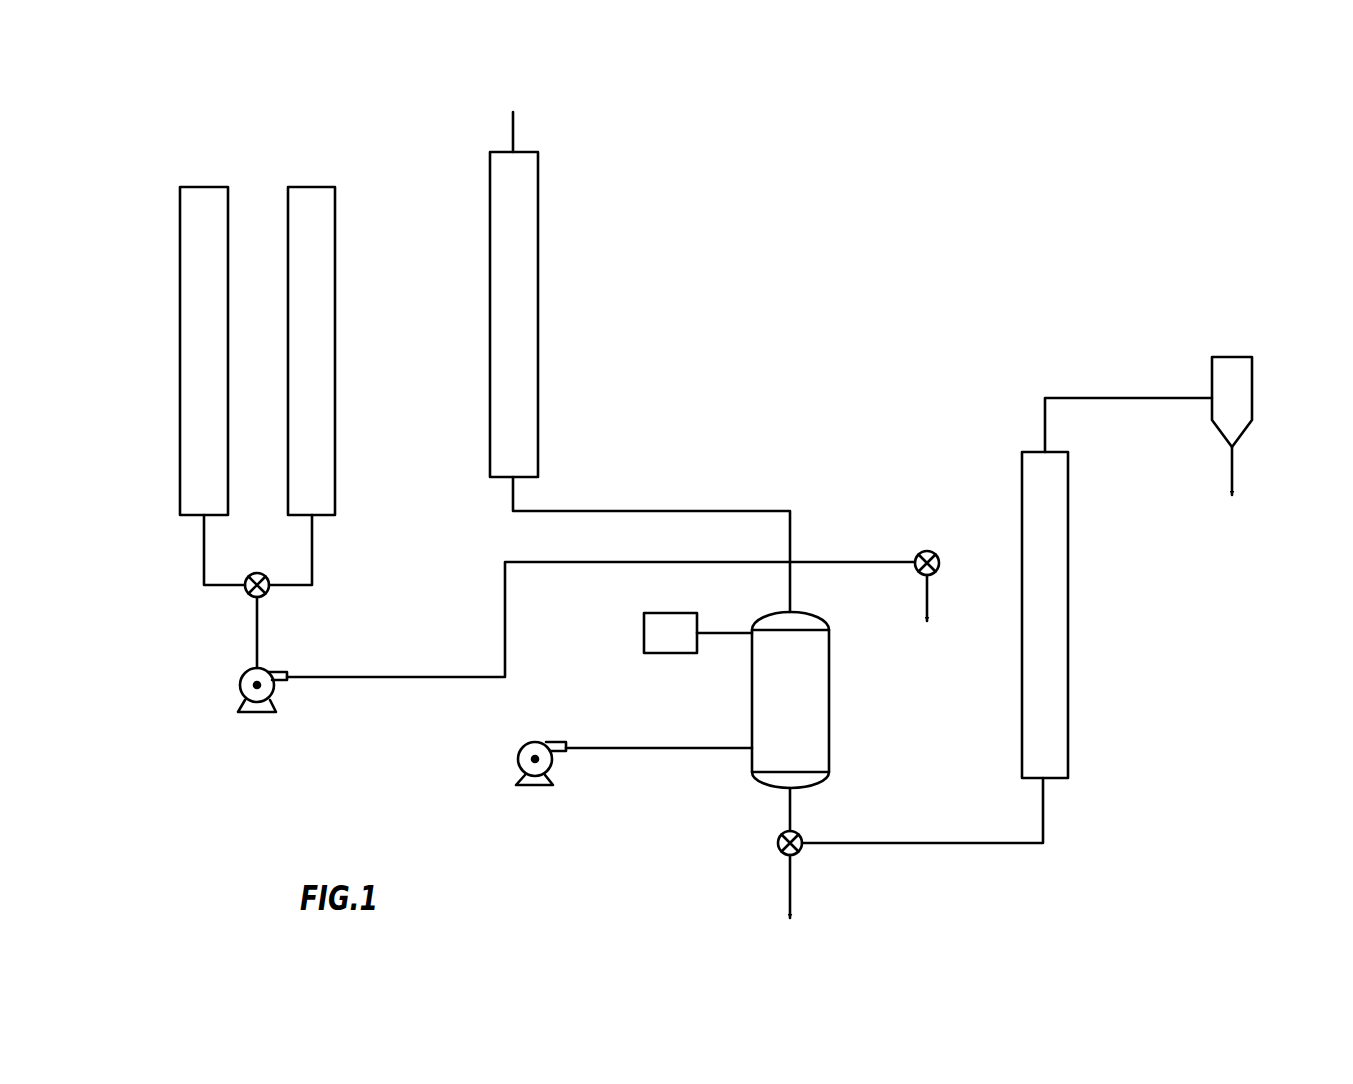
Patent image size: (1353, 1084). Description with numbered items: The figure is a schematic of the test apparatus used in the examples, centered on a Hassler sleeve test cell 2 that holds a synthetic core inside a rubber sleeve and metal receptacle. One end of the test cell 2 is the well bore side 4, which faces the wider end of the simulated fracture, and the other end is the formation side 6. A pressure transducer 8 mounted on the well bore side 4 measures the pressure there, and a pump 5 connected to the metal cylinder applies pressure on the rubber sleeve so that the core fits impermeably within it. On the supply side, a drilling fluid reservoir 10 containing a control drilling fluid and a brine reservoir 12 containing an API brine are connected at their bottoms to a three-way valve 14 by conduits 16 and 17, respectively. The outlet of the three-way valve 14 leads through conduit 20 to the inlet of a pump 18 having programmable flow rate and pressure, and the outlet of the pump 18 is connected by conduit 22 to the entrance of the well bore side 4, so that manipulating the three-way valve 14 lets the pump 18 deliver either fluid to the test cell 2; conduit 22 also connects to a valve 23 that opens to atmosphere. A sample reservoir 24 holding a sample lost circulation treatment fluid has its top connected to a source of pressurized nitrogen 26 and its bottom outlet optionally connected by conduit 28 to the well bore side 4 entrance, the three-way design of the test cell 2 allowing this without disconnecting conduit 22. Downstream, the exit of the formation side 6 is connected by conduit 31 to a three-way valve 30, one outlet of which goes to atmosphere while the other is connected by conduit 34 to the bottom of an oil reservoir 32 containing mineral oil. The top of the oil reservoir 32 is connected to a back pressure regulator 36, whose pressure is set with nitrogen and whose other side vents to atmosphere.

The Hassler sleeve test cell 2 is at (800, 705).
The well bore side 4 is at (773, 612).
The pump 5 is at (517, 756).
The formation side 6 is at (818, 786).
The pressure transducer 8 is at (653, 655).
The drilling fluid reservoir 10 is at (180, 243).
The brine reservoir 12 is at (335, 258).
The three-way valve 14 is at (244, 595).
The conduit 16 is at (204, 541).
The conduit 17 is at (312, 565).
The pump 18 is at (238, 688).
The conduit 20 is at (257, 648).
The conduit 22 is at (528, 560).
The valve 23 is at (927, 550).
The sample reservoir 24 is at (538, 297).
The source of pressurized nitrogen 26 is at (522, 125).
The conduit 28 is at (655, 511).
The three-way valve 30 is at (778, 852).
The conduit 31 is at (787, 813).
The oil reservoir 32 is at (1068, 698).
The conduit 34 is at (950, 846).
The back pressure regulator 36 is at (1252, 388).